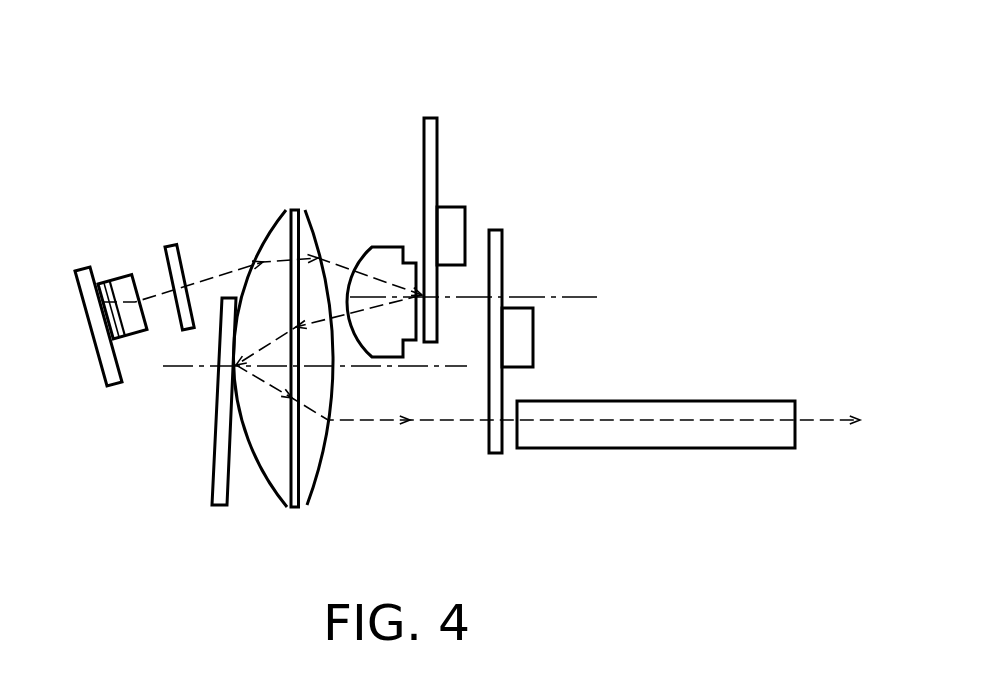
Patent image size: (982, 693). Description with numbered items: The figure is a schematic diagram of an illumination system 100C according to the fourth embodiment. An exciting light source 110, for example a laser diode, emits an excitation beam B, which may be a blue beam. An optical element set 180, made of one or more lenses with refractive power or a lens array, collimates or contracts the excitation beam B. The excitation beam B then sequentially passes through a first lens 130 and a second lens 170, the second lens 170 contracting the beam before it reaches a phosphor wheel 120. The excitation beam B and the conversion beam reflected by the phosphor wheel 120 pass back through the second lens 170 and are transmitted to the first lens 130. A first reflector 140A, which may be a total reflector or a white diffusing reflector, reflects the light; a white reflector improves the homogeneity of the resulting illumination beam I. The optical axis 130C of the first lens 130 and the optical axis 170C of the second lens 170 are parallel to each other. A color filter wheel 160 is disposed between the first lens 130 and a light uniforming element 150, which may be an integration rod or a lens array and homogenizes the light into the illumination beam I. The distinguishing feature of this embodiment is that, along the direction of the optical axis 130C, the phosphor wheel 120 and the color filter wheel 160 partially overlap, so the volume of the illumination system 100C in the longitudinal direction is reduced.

The illumination system 100C is at (120, 185).
The exciting light source 110 is at (75, 289).
The optical element set 180 is at (171, 247).
The first reflector 140A is at (217, 484).
The first lens 130 is at (287, 510).
The optical axis of the first lens 130C is at (392, 368).
The second lens 170 is at (382, 247).
The optical axis of the second lens 170C is at (572, 293).
The phosphor wheel 120 is at (430, 153).
The color filter wheel 160 is at (495, 455).
The light uniforming element 150 is at (660, 401).
The excitation beam B is at (345, 265).
The illumination beam I is at (823, 417).